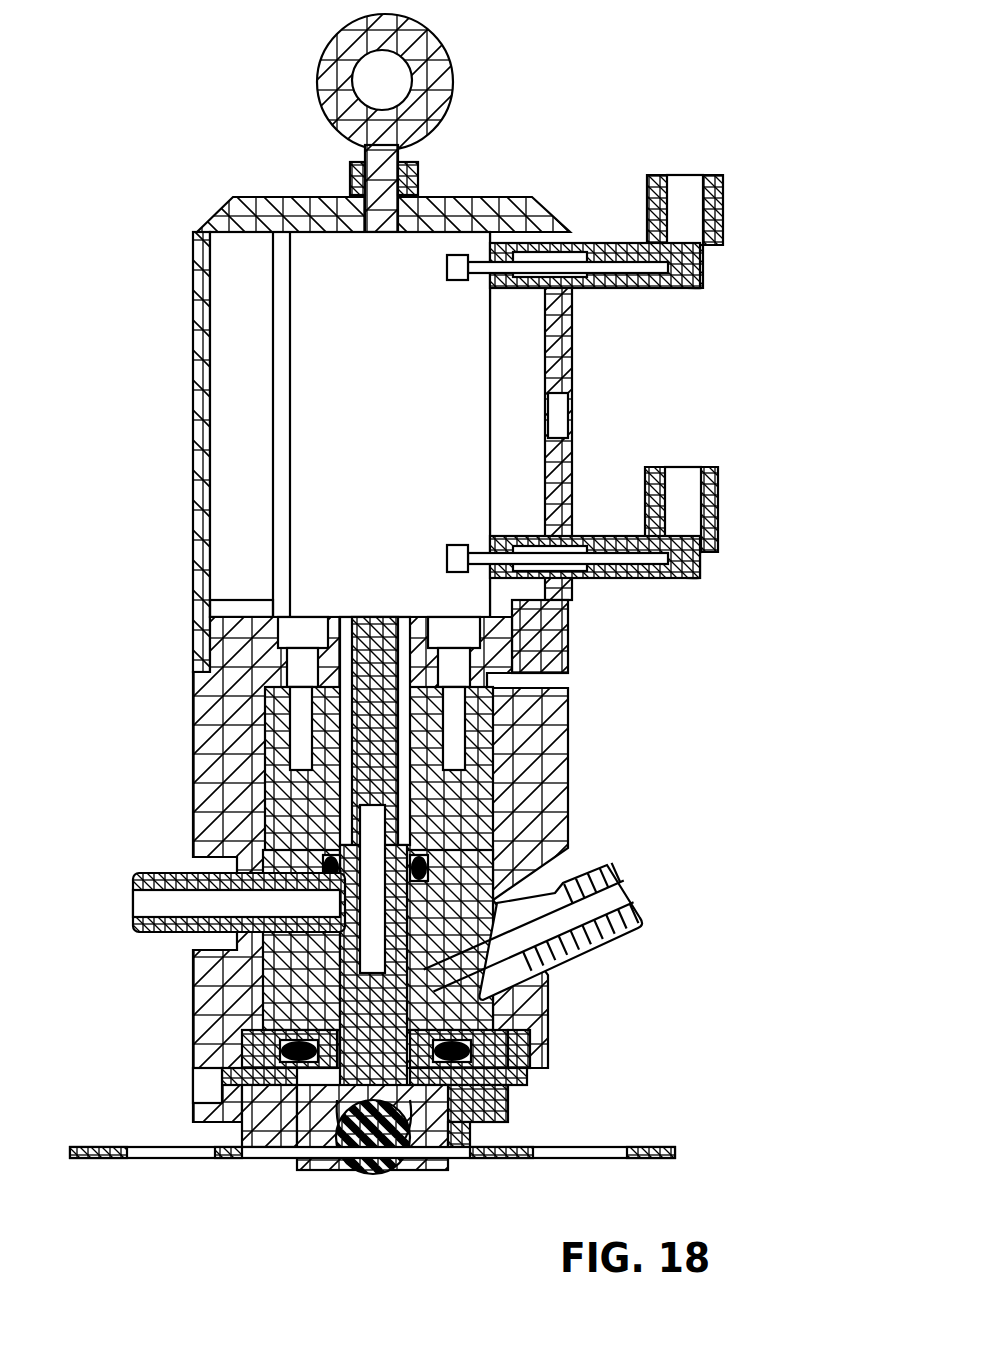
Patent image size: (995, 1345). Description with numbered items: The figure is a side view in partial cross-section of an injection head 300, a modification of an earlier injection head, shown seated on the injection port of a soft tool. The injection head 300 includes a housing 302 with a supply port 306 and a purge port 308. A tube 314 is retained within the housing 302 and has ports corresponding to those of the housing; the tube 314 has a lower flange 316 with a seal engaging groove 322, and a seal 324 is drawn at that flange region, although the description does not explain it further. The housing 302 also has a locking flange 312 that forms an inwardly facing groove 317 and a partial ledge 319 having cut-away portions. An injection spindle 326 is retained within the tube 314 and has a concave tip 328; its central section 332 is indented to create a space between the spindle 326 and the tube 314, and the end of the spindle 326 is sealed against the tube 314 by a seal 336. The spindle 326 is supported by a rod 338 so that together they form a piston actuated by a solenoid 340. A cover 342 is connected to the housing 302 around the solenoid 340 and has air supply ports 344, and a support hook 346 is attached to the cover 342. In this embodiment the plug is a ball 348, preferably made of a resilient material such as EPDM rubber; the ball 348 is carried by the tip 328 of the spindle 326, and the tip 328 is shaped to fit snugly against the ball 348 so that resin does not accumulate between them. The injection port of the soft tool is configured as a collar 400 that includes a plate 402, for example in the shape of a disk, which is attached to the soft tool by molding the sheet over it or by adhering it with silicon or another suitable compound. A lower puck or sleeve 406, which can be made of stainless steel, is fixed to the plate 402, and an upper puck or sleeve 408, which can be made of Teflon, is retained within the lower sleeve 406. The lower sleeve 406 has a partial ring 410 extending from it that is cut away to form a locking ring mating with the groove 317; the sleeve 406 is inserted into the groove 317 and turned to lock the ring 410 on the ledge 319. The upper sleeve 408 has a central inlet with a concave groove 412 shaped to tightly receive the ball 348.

The injection head 300 is at (636, 117).
The housing 302 is at (548, 698).
The supply port 306 is at (600, 882).
The purge port 308 is at (188, 877).
The locking flange 312 is at (535, 1100).
The tube 314 is at (480, 755).
The lower flange 316 is at (530, 1072).
The inwardly facing groove 317 is at (262, 1050).
The partial ledge 319 is at (245, 1112).
The seal engaging groove 322 is at (522, 1035).
The O-ring seal 324 is at (472, 1050).
The injection spindle 326 is at (300, 1020).
The concave tip 328 is at (432, 1165).
The central section 332 is at (340, 995).
The seal 336 is at (428, 838).
The rod 338 is at (372, 822).
The solenoid 340 is at (305, 388).
The cover 342 is at (570, 370).
The air supply ports 344 is at (724, 222).
The support hook 346 is at (442, 78).
The ball 348 is at (378, 1176).
The collar 400 is at (195, 1176).
The plate 402 is at (650, 1147).
The lower sleeve 406 is at (450, 1165).
The upper sleeve 408 is at (312, 1165).
The partial ring 410 is at (240, 1085).
The concave groove 412 is at (355, 1168).